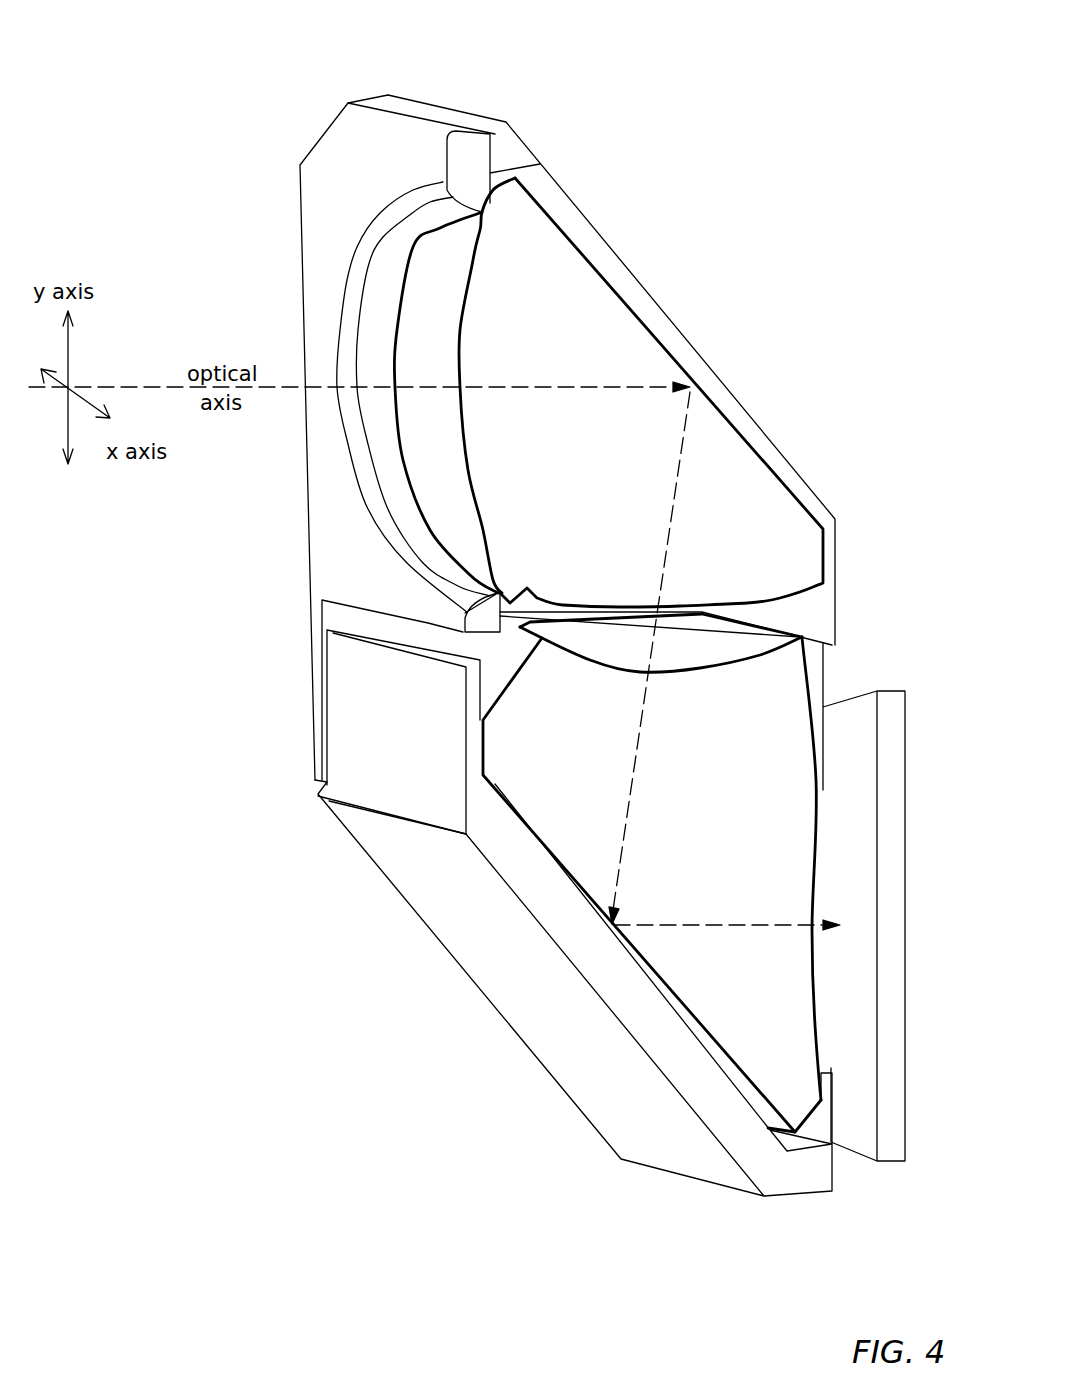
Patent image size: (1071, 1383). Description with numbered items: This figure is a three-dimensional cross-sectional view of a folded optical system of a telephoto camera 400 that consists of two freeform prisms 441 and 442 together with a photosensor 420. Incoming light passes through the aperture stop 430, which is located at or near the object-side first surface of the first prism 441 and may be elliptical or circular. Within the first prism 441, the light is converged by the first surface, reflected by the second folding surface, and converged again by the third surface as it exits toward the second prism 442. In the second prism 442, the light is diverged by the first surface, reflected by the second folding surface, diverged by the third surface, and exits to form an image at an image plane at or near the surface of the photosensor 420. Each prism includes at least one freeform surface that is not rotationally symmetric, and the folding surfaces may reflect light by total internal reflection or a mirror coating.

The telephoto camera 400 is at (166, 73).
The aperture stop 430 is at (364, 288).
The first freeform prism 441 is at (608, 392).
The second freeform prism 442 is at (652, 873).
The photosensor 420 is at (889, 677).